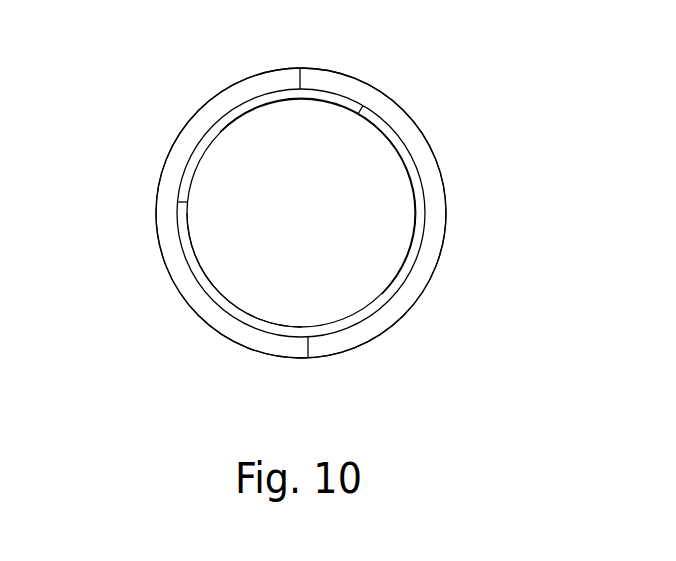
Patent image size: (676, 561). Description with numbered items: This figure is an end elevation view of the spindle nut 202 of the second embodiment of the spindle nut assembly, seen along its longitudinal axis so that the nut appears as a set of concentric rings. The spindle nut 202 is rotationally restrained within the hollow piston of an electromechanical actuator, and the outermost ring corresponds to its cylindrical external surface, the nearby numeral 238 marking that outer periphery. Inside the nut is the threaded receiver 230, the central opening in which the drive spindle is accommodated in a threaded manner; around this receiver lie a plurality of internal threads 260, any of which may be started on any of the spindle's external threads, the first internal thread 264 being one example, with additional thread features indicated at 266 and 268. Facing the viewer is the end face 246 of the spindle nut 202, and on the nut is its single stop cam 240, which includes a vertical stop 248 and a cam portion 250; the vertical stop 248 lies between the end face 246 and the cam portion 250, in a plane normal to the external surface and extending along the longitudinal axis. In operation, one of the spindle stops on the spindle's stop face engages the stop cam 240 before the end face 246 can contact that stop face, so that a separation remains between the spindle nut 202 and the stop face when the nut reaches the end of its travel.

The spindle nut 202 is at (407, 90).
The threaded receiver 230 is at (320, 228).
The outer surface 238 is at (230, 74).
The stop cam 240 is at (155, 292).
The end face 246 is at (437, 245).
The vertical stop 248 is at (310, 350).
The cam portion 250 is at (167, 240).
The internal threads 260 is at (351, 132).
The first internal thread 264 is at (213, 282).
The inner wall 266 is at (410, 240).
The inner tube 268 is at (287, 100).